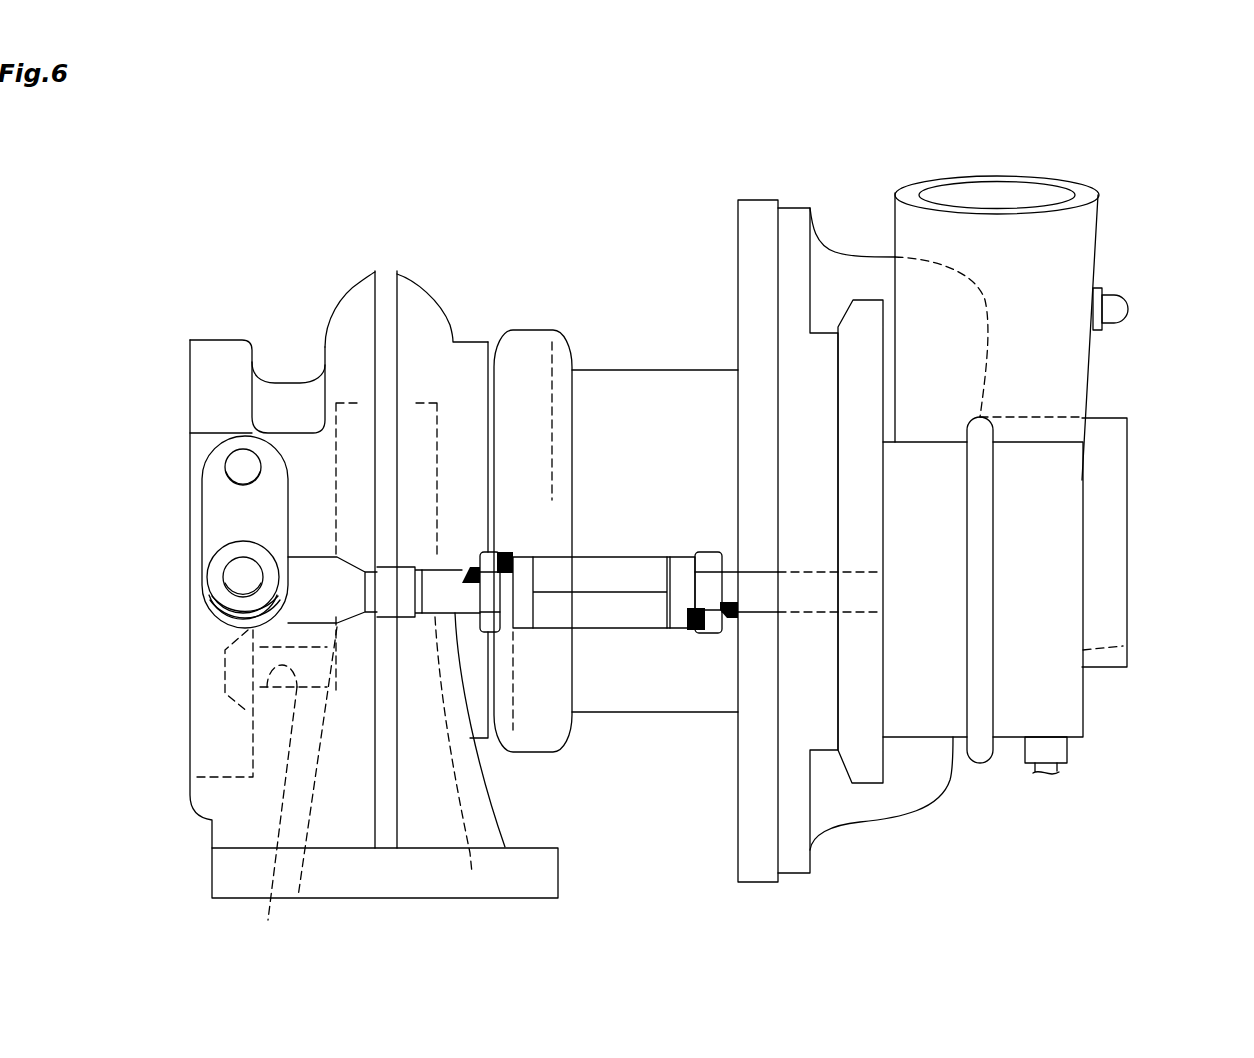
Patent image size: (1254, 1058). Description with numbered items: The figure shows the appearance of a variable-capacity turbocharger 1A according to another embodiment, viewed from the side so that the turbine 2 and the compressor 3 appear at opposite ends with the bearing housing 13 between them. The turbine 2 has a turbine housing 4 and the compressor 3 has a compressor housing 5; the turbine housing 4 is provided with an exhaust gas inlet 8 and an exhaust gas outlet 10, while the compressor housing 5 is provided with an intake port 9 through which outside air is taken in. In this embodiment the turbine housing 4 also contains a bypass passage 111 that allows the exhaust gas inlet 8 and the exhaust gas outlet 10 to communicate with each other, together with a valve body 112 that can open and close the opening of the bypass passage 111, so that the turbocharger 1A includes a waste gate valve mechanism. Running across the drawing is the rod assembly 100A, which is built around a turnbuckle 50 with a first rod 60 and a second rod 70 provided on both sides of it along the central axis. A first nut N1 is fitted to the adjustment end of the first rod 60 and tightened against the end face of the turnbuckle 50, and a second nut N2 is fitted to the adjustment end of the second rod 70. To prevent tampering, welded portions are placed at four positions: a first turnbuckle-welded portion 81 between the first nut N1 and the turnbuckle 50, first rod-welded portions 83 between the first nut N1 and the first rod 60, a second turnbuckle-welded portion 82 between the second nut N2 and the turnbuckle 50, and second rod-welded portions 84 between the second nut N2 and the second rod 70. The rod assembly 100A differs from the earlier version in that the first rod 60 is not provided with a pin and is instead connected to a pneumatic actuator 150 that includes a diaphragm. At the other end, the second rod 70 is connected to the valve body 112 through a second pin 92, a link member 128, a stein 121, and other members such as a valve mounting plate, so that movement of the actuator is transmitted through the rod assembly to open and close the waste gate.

The variable-capacity turbocharger 1A is at (633, 198).
The turbine 2 is at (303, 226).
The compressor 3 is at (861, 180).
The turbine housing 4 is at (328, 304).
The compressor housing 5 is at (843, 240).
The exhaust gas inlet 8 is at (472, 874).
The intake port 9 is at (1084, 420).
The exhaust gas outlet 10 is at (245, 713).
The bearing housing 13 is at (657, 368).
The turnbuckle 50 is at (647, 602).
The first rod 60 is at (808, 613).
The second rod 70 is at (410, 618).
The first turnbuckle-welded portion 81 is at (695, 635).
The second turnbuckle-welded portion 82 is at (499, 551).
The first rod-welded portions 83 is at (725, 622).
The second rod-welded portions 84 is at (462, 565).
The second pin 92 is at (236, 578).
The rod assembly 100A is at (597, 660).
The bypass passage 111 is at (292, 794).
The valve body 112 is at (237, 668).
The stein 121 is at (236, 468).
The link member 128 is at (236, 522).
The pneumatic actuator 150 is at (1090, 706).
The first nut N1 is at (718, 550).
The second nut N2 is at (502, 632).